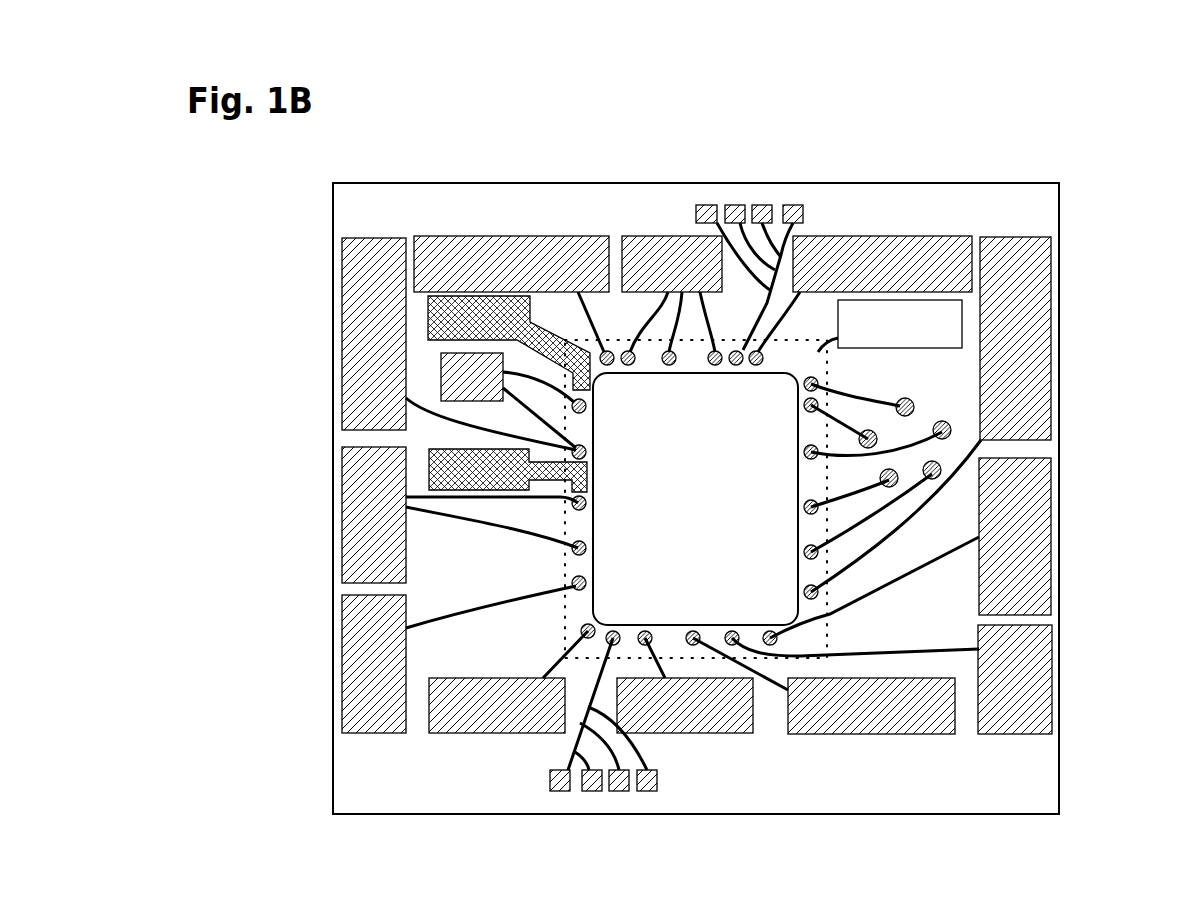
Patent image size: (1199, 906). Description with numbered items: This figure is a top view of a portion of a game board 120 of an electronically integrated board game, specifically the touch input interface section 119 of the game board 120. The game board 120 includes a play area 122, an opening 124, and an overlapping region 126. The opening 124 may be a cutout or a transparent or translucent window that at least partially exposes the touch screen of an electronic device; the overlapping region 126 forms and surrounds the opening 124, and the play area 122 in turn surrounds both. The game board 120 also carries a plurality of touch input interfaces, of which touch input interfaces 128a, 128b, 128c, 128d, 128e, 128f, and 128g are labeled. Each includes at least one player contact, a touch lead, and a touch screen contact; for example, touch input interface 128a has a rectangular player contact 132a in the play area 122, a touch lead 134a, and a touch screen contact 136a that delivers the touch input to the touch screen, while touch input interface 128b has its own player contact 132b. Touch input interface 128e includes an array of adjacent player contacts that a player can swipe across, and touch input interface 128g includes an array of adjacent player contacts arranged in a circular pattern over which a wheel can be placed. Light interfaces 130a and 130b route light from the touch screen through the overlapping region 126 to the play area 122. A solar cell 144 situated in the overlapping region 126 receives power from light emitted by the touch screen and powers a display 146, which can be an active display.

The touch input interface section 119 is at (1061, 499).
The game board 120 is at (1131, 134).
The play area 122 is at (1017, 805).
The opening 124 is at (683, 495).
The overlapping region 126 is at (570, 633).
The touch input interface 128a is at (345, 664).
The touch input interface 128b is at (431, 515).
The touch input interface 128c is at (355, 298).
The touch input interface 128d is at (452, 401).
The touch input interface 128e is at (781, 200).
The touch input interface 128f is at (637, 798).
The touch input interface 128g is at (933, 403).
The light interface 130a is at (504, 328).
The light interface 130b is at (504, 479).
The player contact 132a is at (353, 669).
The player contact 132b is at (353, 539).
The touch lead 134a is at (488, 606).
The touch screen contact 136a is at (573, 580).
The solar cell 144 is at (782, 367).
The display 146 is at (886, 344).